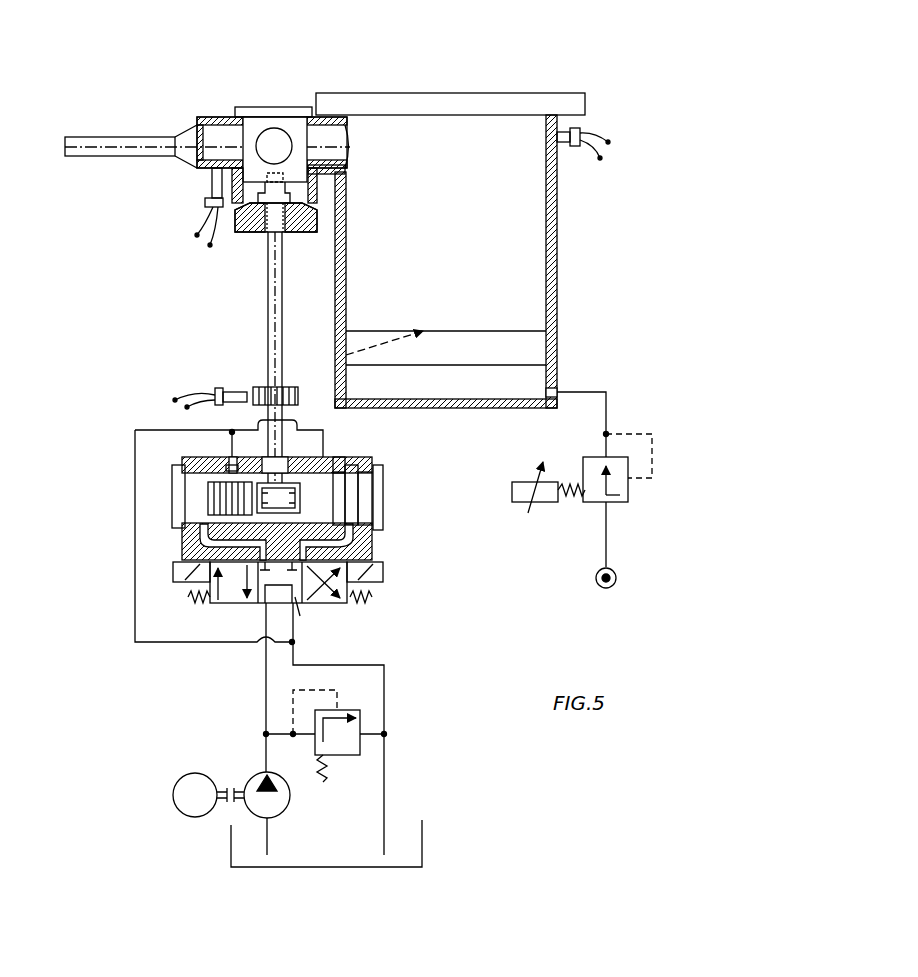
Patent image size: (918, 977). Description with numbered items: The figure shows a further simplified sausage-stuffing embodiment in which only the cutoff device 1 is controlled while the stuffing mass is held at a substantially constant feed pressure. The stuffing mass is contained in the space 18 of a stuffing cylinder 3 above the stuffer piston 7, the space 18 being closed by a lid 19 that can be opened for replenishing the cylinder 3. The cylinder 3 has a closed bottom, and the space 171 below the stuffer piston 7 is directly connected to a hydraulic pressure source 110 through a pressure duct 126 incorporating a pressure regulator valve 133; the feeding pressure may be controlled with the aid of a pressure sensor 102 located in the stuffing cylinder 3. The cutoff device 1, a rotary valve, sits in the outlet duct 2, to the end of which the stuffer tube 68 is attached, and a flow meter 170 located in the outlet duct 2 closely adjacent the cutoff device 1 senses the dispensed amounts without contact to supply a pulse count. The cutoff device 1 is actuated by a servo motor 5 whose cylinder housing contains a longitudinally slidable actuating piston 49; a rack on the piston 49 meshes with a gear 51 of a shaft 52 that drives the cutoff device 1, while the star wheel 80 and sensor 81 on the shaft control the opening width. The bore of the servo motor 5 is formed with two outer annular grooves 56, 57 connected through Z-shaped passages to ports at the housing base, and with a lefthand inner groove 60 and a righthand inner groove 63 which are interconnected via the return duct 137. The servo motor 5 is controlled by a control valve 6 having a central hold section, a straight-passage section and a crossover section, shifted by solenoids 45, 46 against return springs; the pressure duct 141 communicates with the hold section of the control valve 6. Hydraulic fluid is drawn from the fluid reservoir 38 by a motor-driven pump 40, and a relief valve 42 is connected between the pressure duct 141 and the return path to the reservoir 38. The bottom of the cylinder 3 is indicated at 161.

The cutoff device 1 is at (287, 93).
The outlet duct 2 is at (227, 133).
The stuffing cylinder 3 is at (557, 216).
The servo motor 5 is at (390, 540).
The control valve 6 is at (352, 618).
The stuffer piston 7 is at (446, 348).
The space 18 is at (446, 226).
The lid 19 is at (505, 102).
The fluid reservoir 38 is at (407, 841).
The pump 40 is at (288, 800).
The relief valve 42 is at (347, 755).
The solenoid 45 is at (173, 570).
The solenoid 46 is at (383, 572).
The actuating piston 49 is at (197, 498).
The gear 51 is at (300, 496).
The shaft 52 is at (268, 295).
The outer annular groove 56 is at (202, 472).
The outer annular groove 57 is at (350, 473).
The lefthand inner annular groove 60 is at (232, 462).
The righthand inner annular groove 63 is at (340, 463).
The stuffer tube 68 is at (113, 152).
The star wheel 80 is at (299, 396).
The sensor 81 is at (238, 395).
The pressure sensor 102 is at (567, 150).
The hydraulic pressure source 110 is at (593, 583).
The pressure duct 126 is at (606, 411).
The pressure regulator valve 133 is at (592, 503).
The return duct 137 is at (384, 688).
The pressure duct 141 is at (266, 692).
The tank bottom 161 is at (485, 403).
The flow meter 170 is at (215, 185).
The space 171 is at (492, 381).